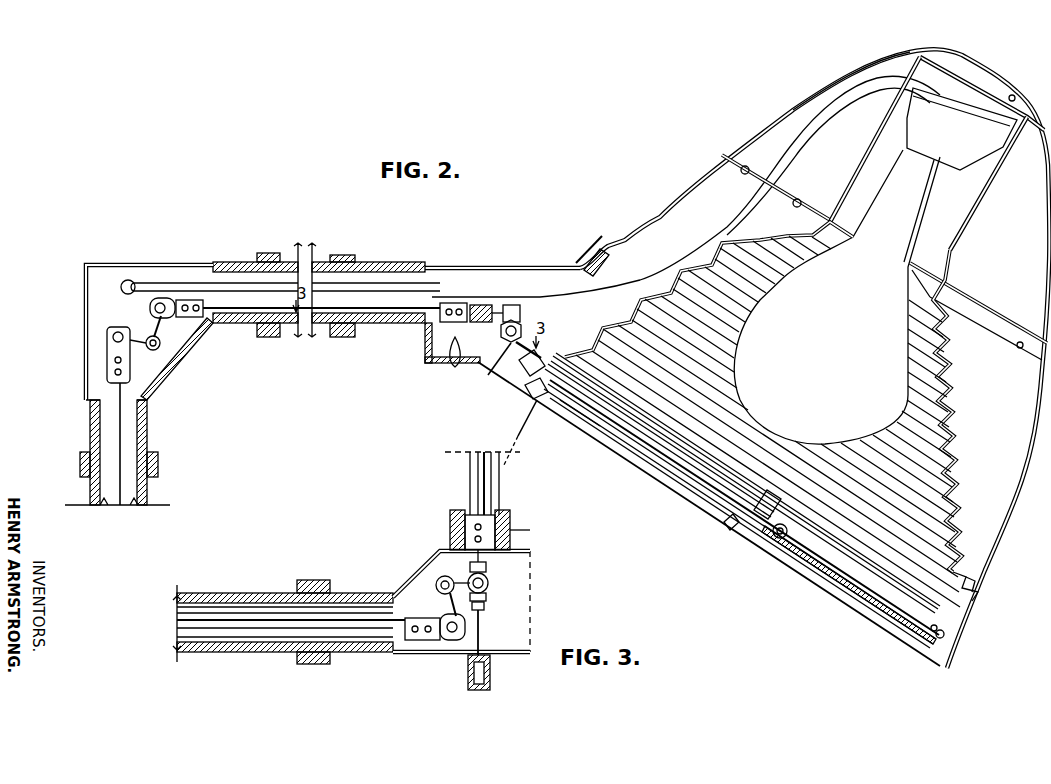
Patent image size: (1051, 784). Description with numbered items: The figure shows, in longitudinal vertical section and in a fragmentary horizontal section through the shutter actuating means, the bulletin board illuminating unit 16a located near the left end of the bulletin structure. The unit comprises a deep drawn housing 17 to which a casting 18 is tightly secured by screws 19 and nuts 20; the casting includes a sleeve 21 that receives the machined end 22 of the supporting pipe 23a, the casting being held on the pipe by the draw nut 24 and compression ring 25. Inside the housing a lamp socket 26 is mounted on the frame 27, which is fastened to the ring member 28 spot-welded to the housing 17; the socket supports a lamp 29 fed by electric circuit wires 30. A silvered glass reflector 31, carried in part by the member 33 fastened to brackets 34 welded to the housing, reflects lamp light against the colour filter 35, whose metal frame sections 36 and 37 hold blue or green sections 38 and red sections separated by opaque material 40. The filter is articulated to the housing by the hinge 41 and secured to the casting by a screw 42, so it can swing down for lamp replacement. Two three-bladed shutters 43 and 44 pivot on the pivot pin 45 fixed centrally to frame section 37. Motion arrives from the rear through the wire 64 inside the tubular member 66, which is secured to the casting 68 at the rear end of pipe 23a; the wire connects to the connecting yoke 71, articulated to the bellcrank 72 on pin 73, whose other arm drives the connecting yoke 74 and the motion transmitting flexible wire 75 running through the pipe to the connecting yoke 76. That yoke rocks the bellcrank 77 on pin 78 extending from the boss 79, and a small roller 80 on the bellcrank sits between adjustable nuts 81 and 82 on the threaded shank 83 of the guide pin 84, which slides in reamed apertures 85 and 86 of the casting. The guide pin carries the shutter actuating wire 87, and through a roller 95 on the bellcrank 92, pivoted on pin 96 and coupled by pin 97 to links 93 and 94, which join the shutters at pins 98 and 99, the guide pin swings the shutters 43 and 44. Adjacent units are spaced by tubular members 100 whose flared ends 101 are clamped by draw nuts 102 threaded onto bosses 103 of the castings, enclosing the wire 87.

In FIG. 2, the illuminating unit 16a is at (797, 100).
In FIG. 2, the housing 17 is at (650, 222).
In FIG. 2, the casting 18 is at (522, 268).
In FIG. 3, the casting 18 is at (412, 582).
In FIG. 2, the screws 19 is at (585, 252).
In FIG. 2, the nuts 20 is at (606, 258).
In FIG. 2, the sleeve 21 is at (386, 260).
In FIG. 3, the sleeve 21 is at (353, 594).
In FIG. 2, the machined end 22 is at (420, 262).
In FIG. 3, the machined end 22 is at (350, 654).
In FIG. 2, the pipe 23a is at (326, 258).
In FIG. 3, the pipe 23a is at (246, 654).
In FIG. 2, the draw nut 24 is at (346, 340).
In FIG. 3, the draw nut 24 is at (307, 580).
In FIG. 2, the compression ring 25 is at (327, 340).
In FIG. 3, the compression ring 25 is at (327, 594).
In FIG. 2, the lamp socket 26 is at (962, 129).
In FIG. 2, the frame 27 is at (983, 204).
In FIG. 2, the ring member 28 is at (748, 167).
In FIG. 2, the lamp 29 is at (837, 297).
In FIG. 2, the electric circuit wires 30 is at (795, 150).
In FIG. 2, the reflector 31 is at (965, 437).
In FIG. 2, the member 33 is at (950, 590).
In FIG. 2, the brackets 34 is at (966, 575).
In FIG. 2, the colour filter 35 is at (830, 524).
In FIG. 2, the metal frame section 36 is at (798, 530).
In FIG. 2, the metal frame section 37 is at (770, 532).
In FIG. 2, the filter sections 38 is at (775, 535).
In FIG. 2, the opaque material 40 is at (642, 460).
In FIG. 2, the hinge 41 is at (936, 634).
In FIG. 2, the screw 42 is at (452, 370).
In FIG. 2, the shutter 43 is at (840, 536).
In FIG. 2, the shutter 44 is at (870, 551).
In FIG. 2, the pivot pin 45 is at (726, 520).
In FIG. 2, the wire 64 is at (125, 437).
In FIG. 2, the tubular member 66 is at (150, 496).
In FIG. 2, the casting 68 is at (186, 361).
In FIG. 2, the connecting yoke 71 is at (106, 345).
In FIG. 2, the bellcrank 72 is at (140, 328).
In FIG. 2, the pin 73 is at (163, 342).
In FIG. 2, the connecting yoke 74 is at (164, 298).
In FIG. 2, the motion transmitting flexible wire 75 is at (234, 305).
In FIG. 3, the motion transmitting flexible wire 75 is at (222, 618).
In FIG. 2, the connecting yoke 76 is at (455, 327).
In FIG. 3, the connecting yoke 76 is at (437, 642).
In FIG. 3, the bellcrank 77 is at (466, 582).
In FIG. 3, the pin 78 is at (442, 596).
In FIG. 2, the boss 79 is at (488, 300).
In FIG. 3, the boss 79 is at (442, 628).
In FIG. 2, the roller 80 is at (522, 320).
In FIG. 3, the roller 80 is at (489, 584).
In FIG. 3, the adjustable nut 81 is at (487, 567).
In FIG. 3, the adjustable nut 82 is at (487, 597).
In FIG. 3, the threaded shank 83 is at (485, 608).
In FIG. 2, the guide pin 84 is at (512, 352).
In FIG. 3, the guide pin 84 is at (508, 520).
In FIG. 3, the reamed aperture 85 is at (465, 532).
In FIG. 3, the reamed aperture 86 is at (490, 682).
In FIG. 2, the motion transmitting flexible wire 87 is at (486, 372).
In FIG. 3, the motion transmitting flexible wire 87 is at (470, 475).
In FIG. 2, the bellcrank 92 is at (520, 380).
In FIG. 2, the link 93 is at (580, 440).
In FIG. 2, the link 94 is at (603, 393).
In FIG. 2, the roller 95 is at (500, 334).
In FIG. 2, the pin 96 is at (534, 400).
In FIG. 2, the pin 97 is at (516, 432).
In FIG. 2, the pin 98 is at (730, 510).
In FIG. 2, the pin 99 is at (760, 482).
In FIG. 3, the tubular members 100 is at (495, 478).
In FIG. 3, the flared ends 101 is at (450, 515).
In FIG. 3, the draw nuts 102 is at (450, 525).
In FIG. 3, the bosses 103 is at (500, 536).